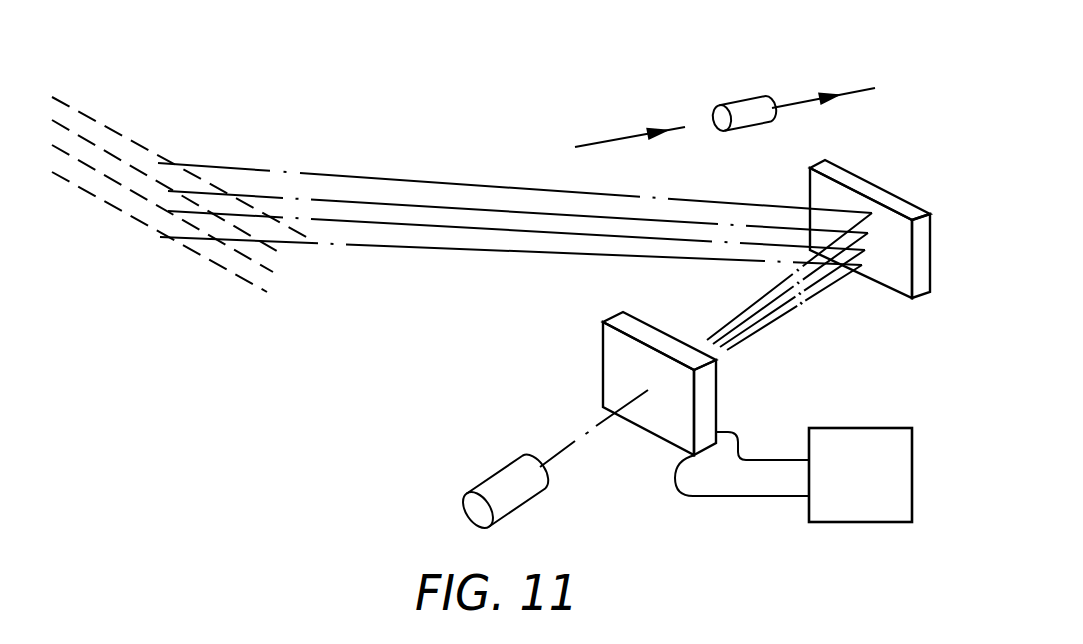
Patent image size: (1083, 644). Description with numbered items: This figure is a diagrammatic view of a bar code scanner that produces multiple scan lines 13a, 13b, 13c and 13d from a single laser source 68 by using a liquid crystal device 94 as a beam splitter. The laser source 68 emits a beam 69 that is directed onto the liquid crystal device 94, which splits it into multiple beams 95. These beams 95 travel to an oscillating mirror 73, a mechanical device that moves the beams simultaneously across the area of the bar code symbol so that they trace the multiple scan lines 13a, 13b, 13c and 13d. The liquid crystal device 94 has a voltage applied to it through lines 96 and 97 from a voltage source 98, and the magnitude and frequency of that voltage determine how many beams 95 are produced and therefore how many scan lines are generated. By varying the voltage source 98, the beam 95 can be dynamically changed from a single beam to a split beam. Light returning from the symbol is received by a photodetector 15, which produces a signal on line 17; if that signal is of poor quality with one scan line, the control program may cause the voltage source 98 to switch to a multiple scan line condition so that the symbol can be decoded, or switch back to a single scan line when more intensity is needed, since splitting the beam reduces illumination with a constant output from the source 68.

The scan line 13a is at (82, 112).
The scan line 13b is at (137, 168).
The scan line 13c is at (102, 177).
The scan line 13d is at (140, 224).
The photodetector 15 is at (748, 118).
The line 17 is at (788, 105).
The oscillating mirror 73 is at (850, 173).
The beams 95 is at (843, 288).
The liquid crystal device 94 is at (607, 357).
The beam 69 is at (565, 447).
The laser source 68 is at (508, 497).
The line 96 is at (768, 458).
The line 97 is at (738, 497).
The voltage source 98 is at (847, 523).